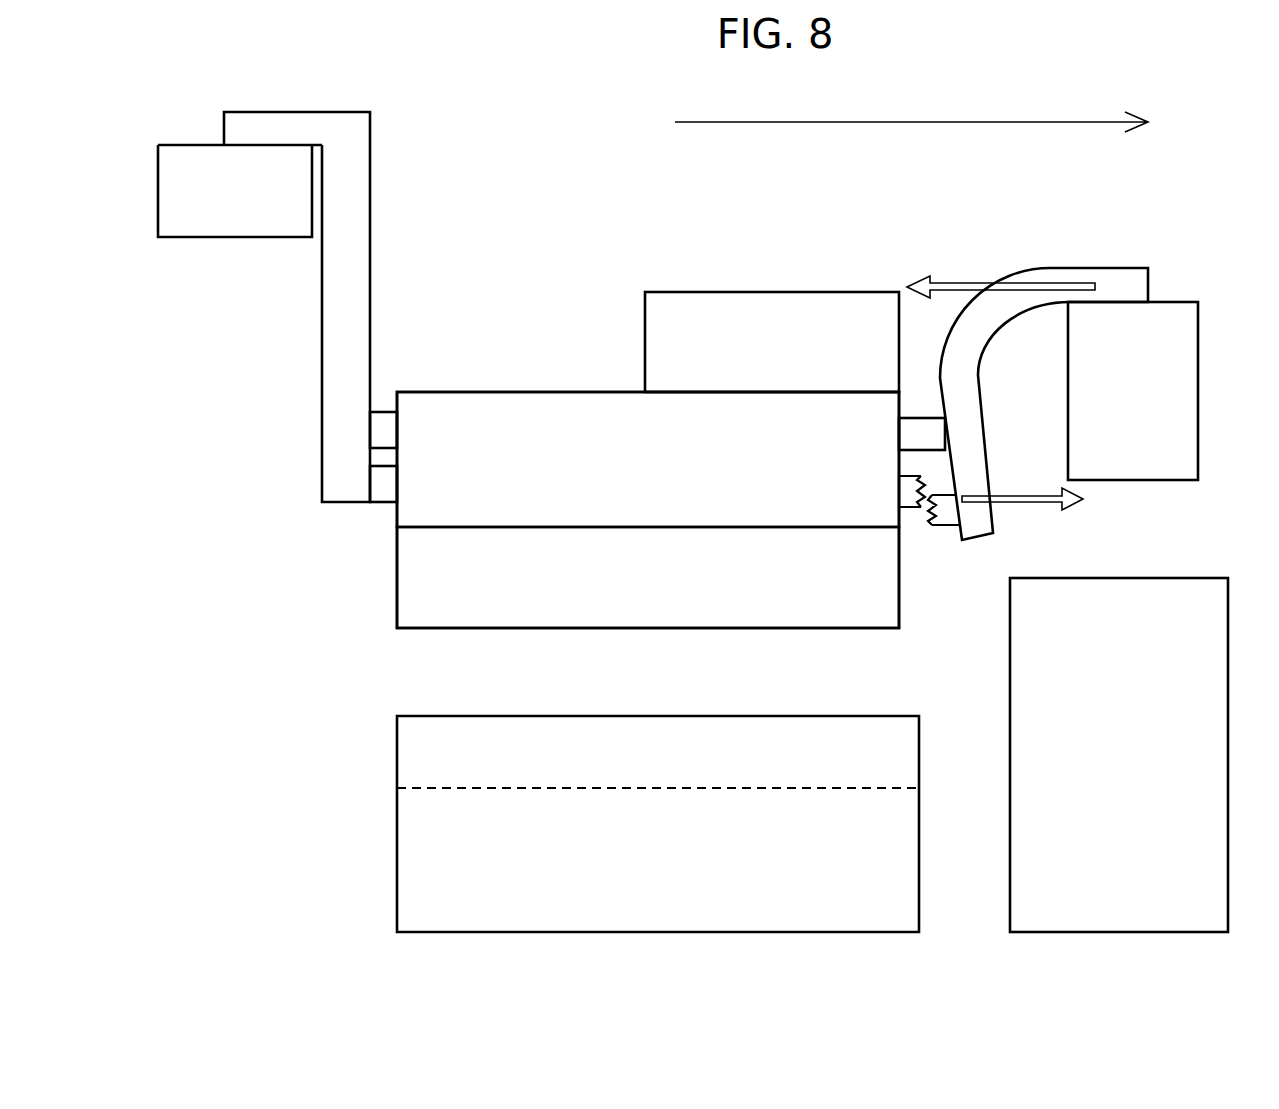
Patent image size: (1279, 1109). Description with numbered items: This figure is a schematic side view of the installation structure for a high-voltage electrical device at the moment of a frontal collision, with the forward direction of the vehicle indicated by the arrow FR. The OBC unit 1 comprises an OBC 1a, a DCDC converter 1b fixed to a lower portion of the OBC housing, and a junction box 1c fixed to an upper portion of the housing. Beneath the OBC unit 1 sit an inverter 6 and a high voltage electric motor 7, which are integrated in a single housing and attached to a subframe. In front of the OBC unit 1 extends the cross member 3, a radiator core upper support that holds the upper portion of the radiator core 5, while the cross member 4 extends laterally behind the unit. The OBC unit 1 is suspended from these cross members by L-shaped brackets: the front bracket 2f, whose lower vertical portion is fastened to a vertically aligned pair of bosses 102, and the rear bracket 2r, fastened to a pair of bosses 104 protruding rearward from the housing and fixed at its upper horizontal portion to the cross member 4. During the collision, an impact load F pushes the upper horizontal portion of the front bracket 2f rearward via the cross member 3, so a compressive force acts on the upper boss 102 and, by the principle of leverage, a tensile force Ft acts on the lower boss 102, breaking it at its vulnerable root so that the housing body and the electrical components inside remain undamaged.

The OBC unit 1 is at (450, 320).
The OBC 1a is at (523, 413).
The DCDC converter 1b is at (459, 543).
The junction box 1c is at (645, 352).
The rear bracket 2r is at (335, 320).
The front bracket 2f is at (1125, 285).
The cross member 3 is at (1188, 397).
The cross member 4 is at (231, 227).
The radiator core 5 is at (1220, 768).
The inverter 6 is at (408, 757).
The high voltage electric motor 7 is at (408, 867).
The boss 102 is at (930, 432).
The boss 104 is at (378, 485).
The impact load F is at (953, 283).
The tensile force Ft is at (1040, 500).
The forward direction FR is at (933, 123).